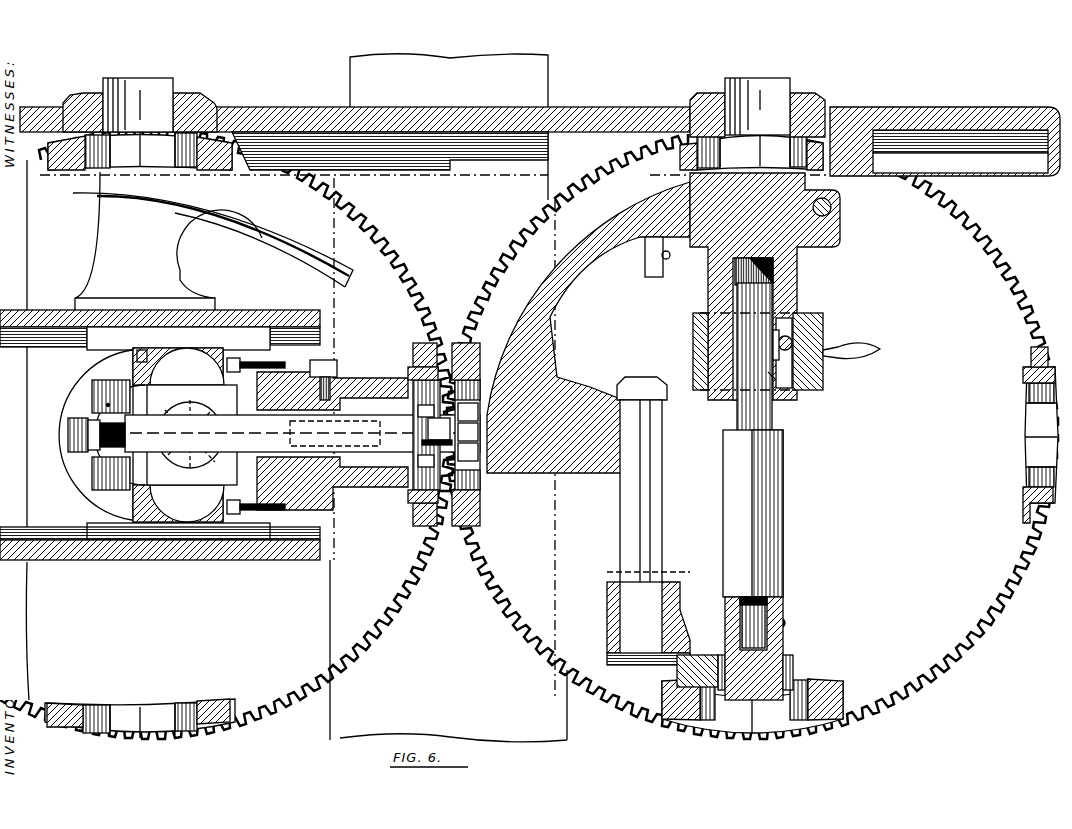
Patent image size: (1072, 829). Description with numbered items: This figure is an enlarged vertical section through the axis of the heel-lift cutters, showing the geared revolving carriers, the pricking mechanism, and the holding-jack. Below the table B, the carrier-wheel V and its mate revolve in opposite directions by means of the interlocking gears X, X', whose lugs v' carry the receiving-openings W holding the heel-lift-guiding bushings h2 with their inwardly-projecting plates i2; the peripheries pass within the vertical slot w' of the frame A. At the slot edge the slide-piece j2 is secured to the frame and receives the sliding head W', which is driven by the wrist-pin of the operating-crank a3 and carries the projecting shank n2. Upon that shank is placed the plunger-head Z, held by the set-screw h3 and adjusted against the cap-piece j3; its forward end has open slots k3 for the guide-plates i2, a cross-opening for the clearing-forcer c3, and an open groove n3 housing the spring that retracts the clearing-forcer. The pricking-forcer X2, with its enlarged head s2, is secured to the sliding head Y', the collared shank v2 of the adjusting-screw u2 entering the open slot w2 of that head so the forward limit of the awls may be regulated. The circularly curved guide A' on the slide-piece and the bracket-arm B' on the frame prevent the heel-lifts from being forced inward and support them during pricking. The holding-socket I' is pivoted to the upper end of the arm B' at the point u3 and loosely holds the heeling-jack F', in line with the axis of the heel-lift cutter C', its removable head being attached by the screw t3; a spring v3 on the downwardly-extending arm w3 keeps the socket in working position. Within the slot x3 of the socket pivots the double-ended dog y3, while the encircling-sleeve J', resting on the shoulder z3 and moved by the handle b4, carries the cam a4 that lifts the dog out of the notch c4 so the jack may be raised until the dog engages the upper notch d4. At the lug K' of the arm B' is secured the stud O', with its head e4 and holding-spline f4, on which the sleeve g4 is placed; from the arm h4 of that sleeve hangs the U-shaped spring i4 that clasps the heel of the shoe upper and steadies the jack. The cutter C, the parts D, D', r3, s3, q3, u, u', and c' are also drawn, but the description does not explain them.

The frame A is at (425, 398).
The heel-lift pressing head and guide A' is at (213, 240).
The table B is at (540, 132).
The circularly-formed bracket-arm B' is at (588, 327).
The journal C is at (144, 100).
The heel-lift cutter C' is at (773, 100).
The bearing box D is at (140, 105).
The bearing box D' is at (753, 106).
The receiving-openings W is at (547, 431).
The sliding head W' is at (95, 434).
The interlocking gear X is at (227, 434).
The interlocking gear X' is at (752, 436).
The pricking-forcer X2 is at (302, 433).
The sliding head Y' is at (185, 435).
The plunger-head Z is at (380, 384).
The inwardly-projecting plates i2 is at (1028, 480).
The heel-lift-guiding bushing h2 is at (218, 174).
The lugs v' is at (547, 435).
The slide-piece j2 is at (254, 310).
The cap-piece j3 is at (136, 356).
The adjusting-screw u2 is at (116, 400).
The collared shank v2 is at (100, 468).
The operating-crank a3 is at (108, 404).
The race s3 is at (216, 420).
The race r3 is at (206, 433).
The open slot w2 is at (80, 420).
The projecting shank n2 is at (353, 436).
The open groove n3 is at (185, 355).
The screw t3 is at (236, 356).
The clutch ring q3 is at (422, 435).
The open slots k3 is at (409, 375).
The clutch member u is at (413, 335).
The clutch member u' is at (470, 426).
The clearing-forcer c3 is at (437, 431).
The enlarged head s2 is at (410, 430).
The set-screw h3 is at (351, 355).
The downwardly-extending arm w3 is at (655, 252).
The spring v3 is at (672, 262).
The holding-socket I' is at (765, 286).
The pivot point u3 is at (833, 208).
The heeling-jack F' is at (766, 440).
The encircling-sleeve J' is at (684, 351).
The cam a4 is at (822, 326).
The slot x3 is at (790, 310).
The double-ended dog y3 is at (792, 325).
The upper notch d4 is at (772, 340).
The notch c4 is at (768, 373).
The projecting handle b4 is at (870, 348).
The shoulder z3 is at (808, 390).
The inwardly-projecting lug K' is at (632, 380).
The downwardly-projecting stud O' is at (632, 491).
The holding-spline f4 is at (616, 572).
The sleeve g4 is at (607, 618).
The head e4 is at (622, 664).
The arm h4 is at (678, 676).
The U-shaped spring i4 is at (720, 656).
The bearing block c' is at (767, 648).
The vertical slot w' is at (435, 599).
The carrier-wheel V is at (360, 632).